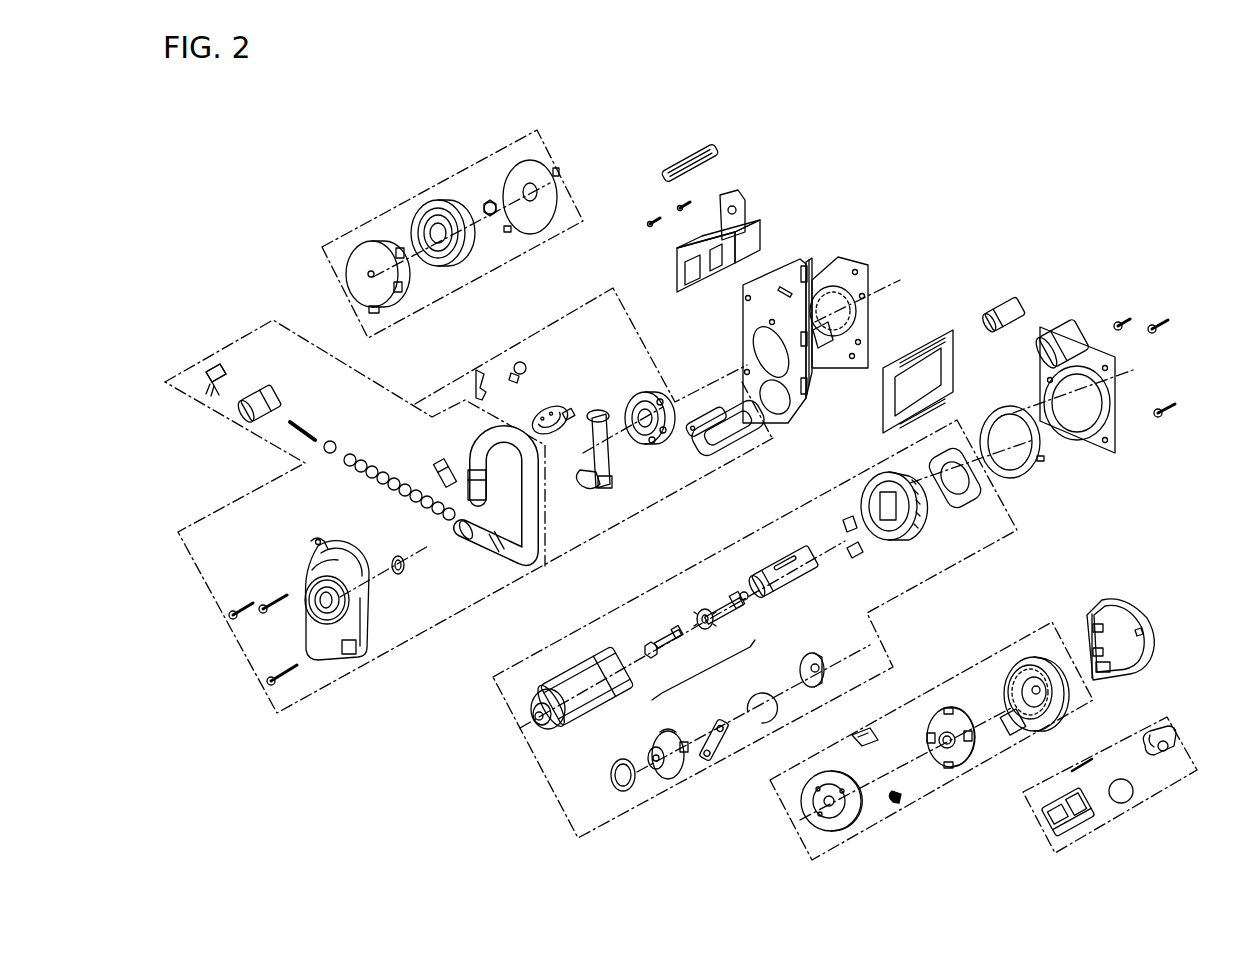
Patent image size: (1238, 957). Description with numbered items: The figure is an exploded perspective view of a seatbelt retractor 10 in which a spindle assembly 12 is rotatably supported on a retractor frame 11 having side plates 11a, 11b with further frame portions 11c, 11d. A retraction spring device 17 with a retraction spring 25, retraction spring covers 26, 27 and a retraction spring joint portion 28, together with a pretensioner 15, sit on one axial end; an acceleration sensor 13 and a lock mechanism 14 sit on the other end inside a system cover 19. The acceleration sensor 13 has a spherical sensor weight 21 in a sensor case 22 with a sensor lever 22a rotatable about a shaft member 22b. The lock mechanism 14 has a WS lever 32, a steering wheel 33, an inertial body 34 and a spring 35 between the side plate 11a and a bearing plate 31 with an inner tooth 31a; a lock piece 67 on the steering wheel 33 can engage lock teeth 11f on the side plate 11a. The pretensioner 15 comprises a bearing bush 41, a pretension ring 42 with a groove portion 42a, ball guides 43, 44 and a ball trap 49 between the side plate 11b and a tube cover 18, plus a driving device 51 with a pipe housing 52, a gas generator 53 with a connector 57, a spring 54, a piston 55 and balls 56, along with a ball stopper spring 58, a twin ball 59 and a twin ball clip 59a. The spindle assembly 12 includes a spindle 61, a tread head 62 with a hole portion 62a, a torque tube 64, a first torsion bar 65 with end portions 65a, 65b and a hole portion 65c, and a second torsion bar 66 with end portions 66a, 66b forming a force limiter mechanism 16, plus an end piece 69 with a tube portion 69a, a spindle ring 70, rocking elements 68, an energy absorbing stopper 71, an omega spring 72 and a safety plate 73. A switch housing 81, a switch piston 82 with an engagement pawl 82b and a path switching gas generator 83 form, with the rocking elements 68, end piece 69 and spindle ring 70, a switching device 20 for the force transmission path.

The seatbelt retractor 10 is at (810, 206).
The retractor frame 11 is at (856, 248).
The side plate 11a is at (870, 278).
The side plate 11b is at (755, 312).
The rear frame plate 11c is at (798, 276).
The frame bracket 11d is at (676, 283).
The lock teeth 11f is at (843, 321).
The spindle assembly 12 is at (495, 735).
The acceleration sensor 13 is at (1180, 800).
The lock mechanism 14 is at (966, 665).
The pretensioner 15 is at (188, 362).
The force limiter mechanism 16 is at (671, 629).
The retraction spring device 17 is at (368, 220).
The tube cover 18 is at (318, 546).
The system cover 19 is at (1120, 600).
The switching device 20 is at (1074, 300).
The sensor weight 21 is at (1123, 803).
The sensor case 22 is at (1043, 818).
The sensor lever 22a is at (1160, 728).
The shaft member 22b is at (1076, 757).
The retraction spring 25 is at (437, 203).
The retraction spring cover 26 is at (352, 250).
The retraction spring cover 27 is at (548, 178).
The retraction spring joint portion 28 is at (496, 220).
The bearing plate 31 is at (1048, 623).
The inner tooth 31a is at (1010, 663).
The WS lever 32 is at (862, 735).
The steering wheel 33 is at (822, 772).
The inertial body 34 is at (940, 708).
The spring 35 is at (897, 808).
The bearing bush 41 is at (396, 556).
The pretension ring 42 is at (630, 406).
The groove portion 42a is at (655, 432).
The ball guide 43 is at (585, 485).
The ball guide 44 is at (552, 408).
The ball trap 49 is at (748, 445).
The driving device 51 is at (235, 342).
The pipe housing 52 is at (508, 438).
The gas generator 53 is at (265, 393).
The spring 54 is at (306, 420).
The piston 55 is at (340, 442).
The balls 56 is at (390, 470).
The connector 57 is at (230, 360).
The ball stopper spring 58 is at (442, 465).
The twin ball 59 is at (528, 362).
The twin ball clip 59a is at (482, 372).
The spindle 61 is at (575, 675).
The tread head 62 is at (678, 778).
The hole portion 62a is at (659, 770).
The torque tube 64 is at (778, 586).
The first torsion bar 65 is at (718, 622).
The end portion 65a is at (742, 594).
The end portion 65b is at (732, 604).
The hole portion 65c is at (698, 618).
The second torsion bar 66 is at (660, 650).
The end portion 66a is at (674, 630).
The end portion 66b is at (648, 645).
The lock piece 67 is at (713, 765).
The rocking elements 68 is at (865, 552).
The end piece 69 is at (870, 483).
The tube portion 69a is at (912, 520).
The spindle ring 70 is at (972, 498).
The energy absorbing stopper 71 is at (610, 785).
The omega spring 72 is at (760, 722).
The safety plate 73 is at (828, 668).
The switch housing 81 is at (1110, 450).
The switch piston 82 is at (1030, 472).
The engagement pawl 82b is at (1044, 460).
The path switching gas generator 83 is at (1010, 300).